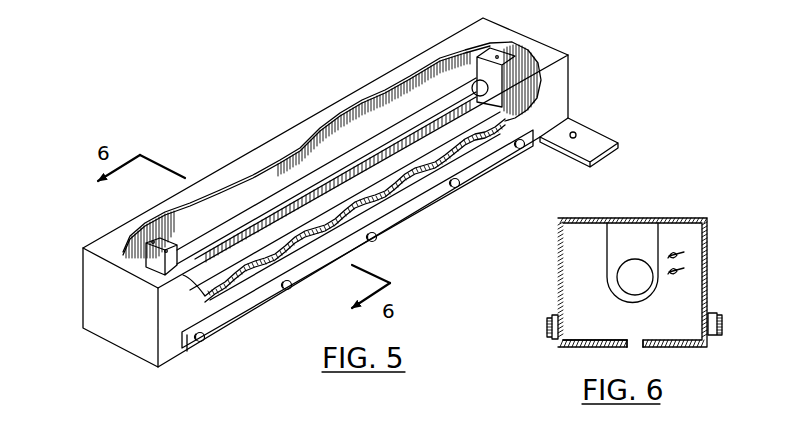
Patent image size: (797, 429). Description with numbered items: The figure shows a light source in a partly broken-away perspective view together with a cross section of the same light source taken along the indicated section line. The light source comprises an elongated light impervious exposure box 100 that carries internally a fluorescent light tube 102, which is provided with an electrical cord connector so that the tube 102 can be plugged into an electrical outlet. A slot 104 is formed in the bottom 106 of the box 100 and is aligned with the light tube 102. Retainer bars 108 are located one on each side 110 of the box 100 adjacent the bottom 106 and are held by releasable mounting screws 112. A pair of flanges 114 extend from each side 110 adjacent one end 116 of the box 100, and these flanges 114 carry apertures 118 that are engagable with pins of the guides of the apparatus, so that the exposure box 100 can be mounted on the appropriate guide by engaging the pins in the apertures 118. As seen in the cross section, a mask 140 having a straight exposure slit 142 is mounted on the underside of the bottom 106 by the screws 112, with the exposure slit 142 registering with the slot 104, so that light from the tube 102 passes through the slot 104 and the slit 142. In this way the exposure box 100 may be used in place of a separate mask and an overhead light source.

In FIG. 5, the exposure box 100 is at (424, 44).
In FIG. 6, the exposure box 100 is at (556, 278).
In FIG. 5, the fluorescent light tube 102 is at (332, 171).
In FIG. 6, the fluorescent light tube 102 is at (638, 280).
In FIG. 5, the slot 104 is at (402, 180).
In FIG. 6, the slot 104 is at (633, 333).
In FIG. 5, the bottom 106 is at (475, 139).
In FIG. 5, the retainer bars 108 is at (400, 215).
In FIG. 5, the side 110 is at (167, 338).
In FIG. 6, the side 110 is at (558, 248).
In FIG. 5, the mounting screws 112 is at (290, 290).
In FIG. 6, the mounting screws 112 is at (547, 327).
In FIG. 5, the flanges 114 is at (593, 142).
In FIG. 5, the end 116 is at (515, 54).
In FIG. 5, the apertures 118 is at (575, 132).
In FIG. 6, the mask 140 is at (580, 348).
In FIG. 6, the exposure slit 142 is at (638, 349).